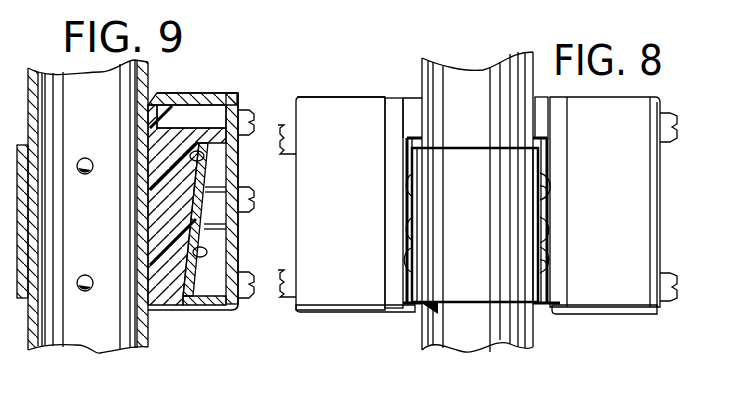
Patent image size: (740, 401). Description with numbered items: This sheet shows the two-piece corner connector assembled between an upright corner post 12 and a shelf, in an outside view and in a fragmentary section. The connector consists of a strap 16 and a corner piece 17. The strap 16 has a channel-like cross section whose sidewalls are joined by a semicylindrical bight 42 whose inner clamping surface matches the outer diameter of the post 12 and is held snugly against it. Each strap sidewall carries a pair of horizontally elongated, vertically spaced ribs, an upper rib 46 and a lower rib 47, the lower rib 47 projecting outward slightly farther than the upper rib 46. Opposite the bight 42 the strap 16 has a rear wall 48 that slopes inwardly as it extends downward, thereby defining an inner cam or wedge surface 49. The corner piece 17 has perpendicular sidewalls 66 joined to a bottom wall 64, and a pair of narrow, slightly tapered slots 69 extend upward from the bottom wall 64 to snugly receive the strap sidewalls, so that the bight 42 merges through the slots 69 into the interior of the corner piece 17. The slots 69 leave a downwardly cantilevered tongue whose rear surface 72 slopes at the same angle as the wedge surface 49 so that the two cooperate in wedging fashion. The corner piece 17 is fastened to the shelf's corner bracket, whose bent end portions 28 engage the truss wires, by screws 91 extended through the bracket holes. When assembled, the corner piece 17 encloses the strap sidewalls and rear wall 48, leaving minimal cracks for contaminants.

In FIG. 8, the corner post 12 is at (517, 324).
In FIG. 8, the strap 16 is at (426, 308).
In FIG. 8, the corner piece 17 is at (334, 90).
In FIG. 9, the end portions 28 is at (238, 158).
In FIG. 8, the bight 42 is at (475, 225).
In FIG. 8, the upper rib 46 is at (548, 193).
In FIG. 8, the lower rib 47 is at (548, 266).
In FIG. 9, the rear wall 48 is at (192, 284).
In FIG. 9, the wedge surface 49 is at (202, 157).
In FIG. 8, the bottom wall 64 is at (612, 314).
In FIG. 8, the sidewalls 66 is at (477, 204).
In FIG. 8, the slots 69 is at (407, 233).
In FIG. 9, the rear surface 72 is at (194, 252).
In FIG. 9, the screws 91 is at (254, 200).